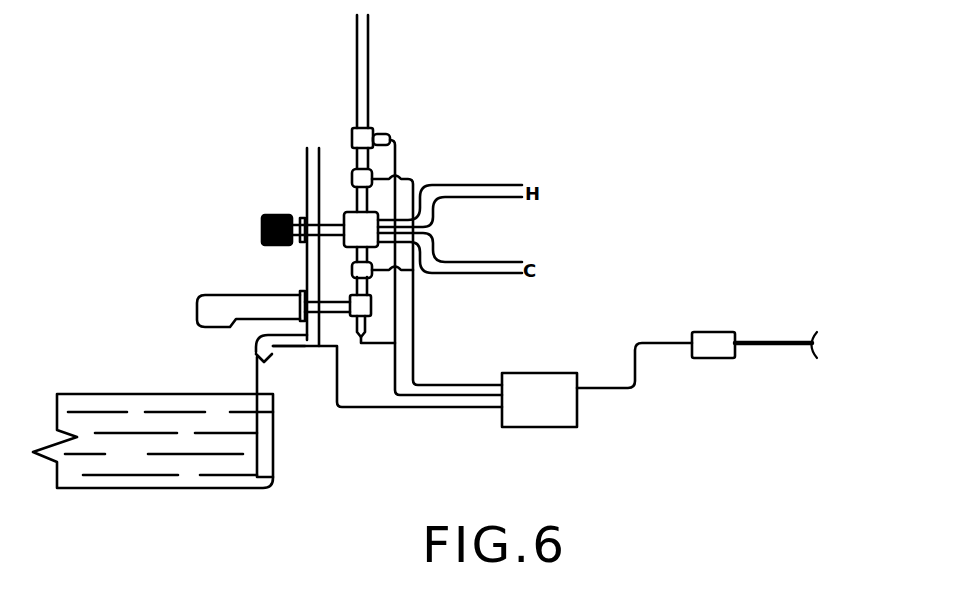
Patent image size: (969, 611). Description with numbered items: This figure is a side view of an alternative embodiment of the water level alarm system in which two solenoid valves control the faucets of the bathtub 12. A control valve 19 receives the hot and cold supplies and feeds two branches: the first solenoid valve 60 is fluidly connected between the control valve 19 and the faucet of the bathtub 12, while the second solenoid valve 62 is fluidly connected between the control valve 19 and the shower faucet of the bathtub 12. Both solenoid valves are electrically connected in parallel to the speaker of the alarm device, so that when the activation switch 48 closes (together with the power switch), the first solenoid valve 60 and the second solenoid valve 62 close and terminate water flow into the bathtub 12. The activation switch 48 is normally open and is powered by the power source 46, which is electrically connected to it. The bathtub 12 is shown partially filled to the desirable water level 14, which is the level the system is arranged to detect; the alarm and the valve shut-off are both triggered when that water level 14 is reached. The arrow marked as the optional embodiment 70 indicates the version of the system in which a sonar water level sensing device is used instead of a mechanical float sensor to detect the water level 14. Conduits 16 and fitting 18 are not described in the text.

The bathtub 12 is at (88, 490).
The water level 14 is at (173, 448).
The supply conduit 16 is at (362, 160).
The flow sensor fitting 18 is at (362, 287).
The control valve 19 is at (347, 213).
The power source 46 is at (717, 353).
The activation switch 48 is at (537, 420).
The first solenoid valve 60 is at (366, 307).
The second solenoid valve 62 is at (368, 128).
The optional embodiment 70 is at (280, 363).